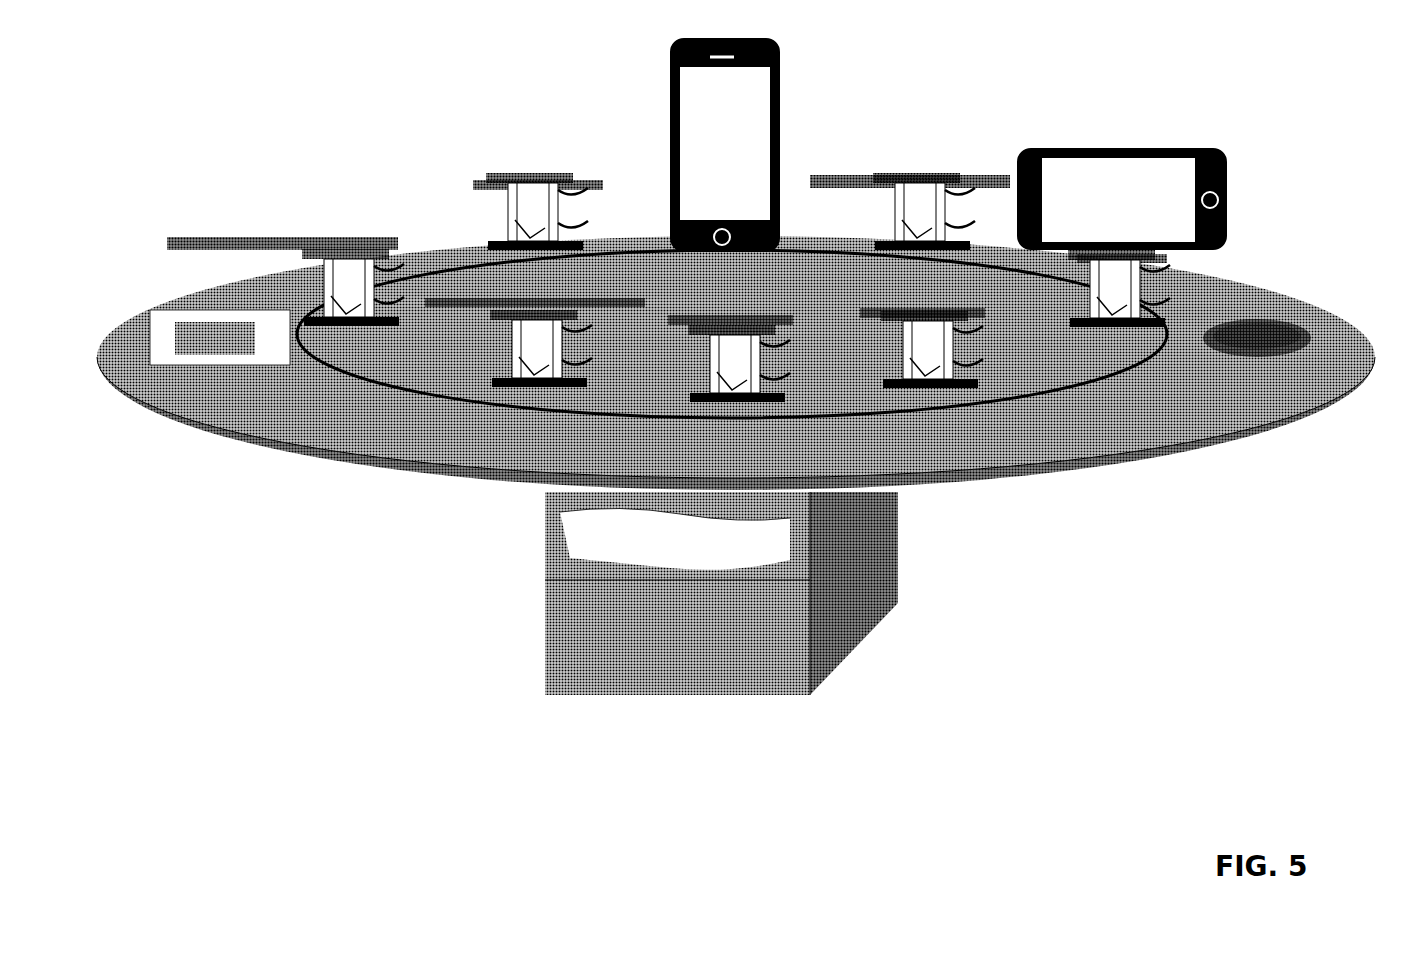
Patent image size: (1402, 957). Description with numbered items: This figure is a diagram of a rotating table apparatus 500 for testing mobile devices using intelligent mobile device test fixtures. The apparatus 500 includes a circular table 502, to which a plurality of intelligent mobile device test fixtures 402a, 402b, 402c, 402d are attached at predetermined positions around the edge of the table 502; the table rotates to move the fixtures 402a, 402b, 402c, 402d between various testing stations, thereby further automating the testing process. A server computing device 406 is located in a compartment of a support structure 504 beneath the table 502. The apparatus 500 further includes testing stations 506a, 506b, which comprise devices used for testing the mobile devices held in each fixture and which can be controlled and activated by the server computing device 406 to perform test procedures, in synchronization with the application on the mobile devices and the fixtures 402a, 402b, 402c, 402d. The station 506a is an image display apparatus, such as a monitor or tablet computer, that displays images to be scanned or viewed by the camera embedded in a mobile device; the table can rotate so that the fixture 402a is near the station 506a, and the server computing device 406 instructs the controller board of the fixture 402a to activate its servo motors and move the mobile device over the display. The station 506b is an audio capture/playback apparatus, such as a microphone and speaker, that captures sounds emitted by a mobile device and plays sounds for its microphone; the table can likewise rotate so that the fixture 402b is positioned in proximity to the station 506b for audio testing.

The rotating table apparatus 500 is at (178, 875).
The circular table 502 is at (418, 450).
The support structure 504 is at (905, 498).
The server computing device 406 is at (684, 523).
The intelligent mobile device test fixture 402a is at (340, 272).
The intelligent mobile device test fixture 402b is at (547, 213).
The intelligent mobile device test fixture 402c is at (933, 213).
The intelligent mobile device test fixture 402d is at (1127, 283).
The testing station (image display apparatus) 506a is at (218, 350).
The testing station (audio capture/playback apparatus) 506b is at (1255, 345).